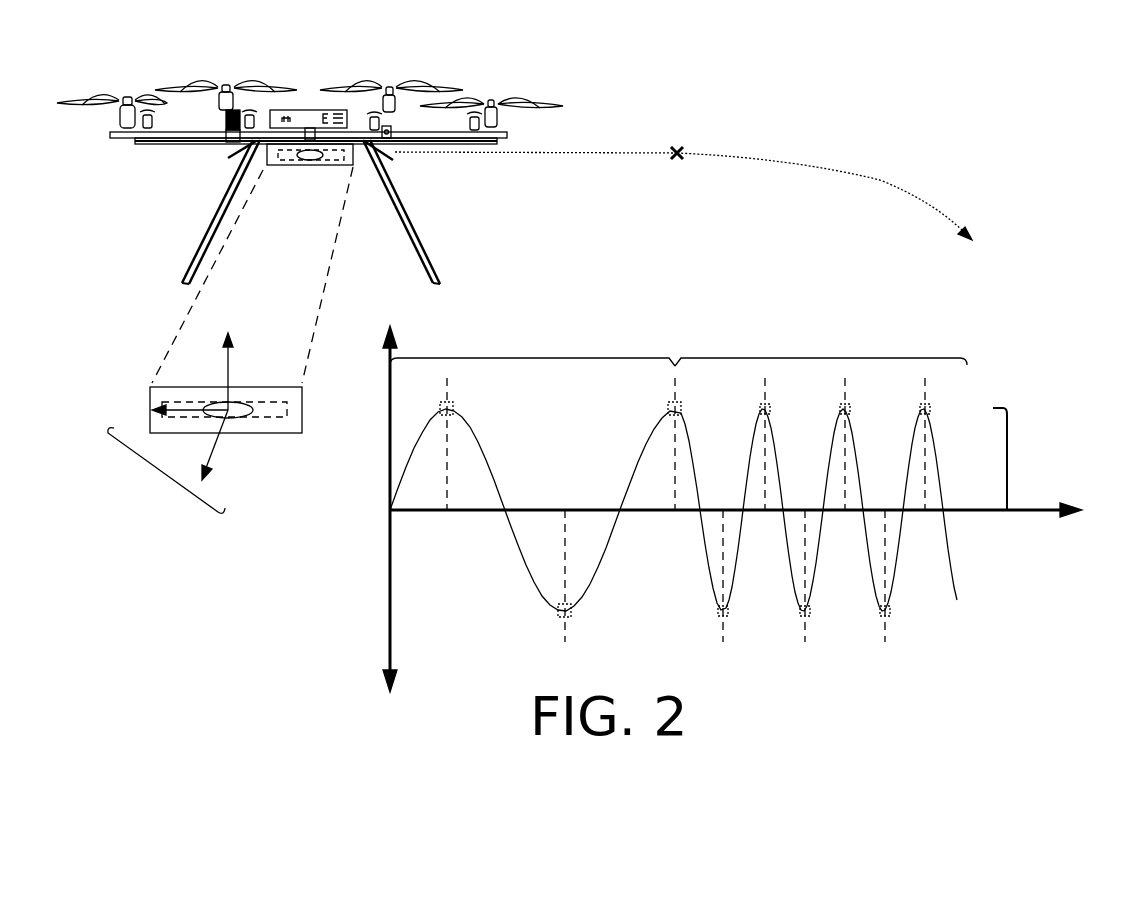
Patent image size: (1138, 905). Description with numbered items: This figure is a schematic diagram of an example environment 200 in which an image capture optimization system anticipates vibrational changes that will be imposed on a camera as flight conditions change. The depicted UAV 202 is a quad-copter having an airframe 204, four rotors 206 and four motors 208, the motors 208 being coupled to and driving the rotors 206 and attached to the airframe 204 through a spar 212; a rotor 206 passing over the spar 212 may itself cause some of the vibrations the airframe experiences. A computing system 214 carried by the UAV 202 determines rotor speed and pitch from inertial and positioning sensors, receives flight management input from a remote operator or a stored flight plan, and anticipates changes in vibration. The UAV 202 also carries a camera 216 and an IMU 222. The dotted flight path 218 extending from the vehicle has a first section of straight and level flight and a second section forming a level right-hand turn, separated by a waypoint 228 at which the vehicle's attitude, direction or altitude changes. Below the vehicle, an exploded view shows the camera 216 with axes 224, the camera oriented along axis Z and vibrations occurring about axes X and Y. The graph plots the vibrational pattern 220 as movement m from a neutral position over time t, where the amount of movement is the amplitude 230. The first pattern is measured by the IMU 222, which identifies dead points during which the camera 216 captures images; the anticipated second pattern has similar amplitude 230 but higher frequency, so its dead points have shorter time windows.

The environment 200 is at (1037, 86).
The UAV 202 is at (497, 49).
The airframe 204 is at (232, 178).
The rotors 206 is at (113, 98).
The motors 208 is at (124, 121).
The spar 212 is at (442, 138).
The computing system 214 is at (327, 110).
The camera 216 is at (323, 160).
The flight path 218 is at (980, 173).
The vibrational pattern 220 is at (825, 295).
The IMU 222 is at (285, 112).
The axes 224 is at (163, 470).
The waypoint 228 is at (670, 147).
The amplitude 230 is at (1009, 460).